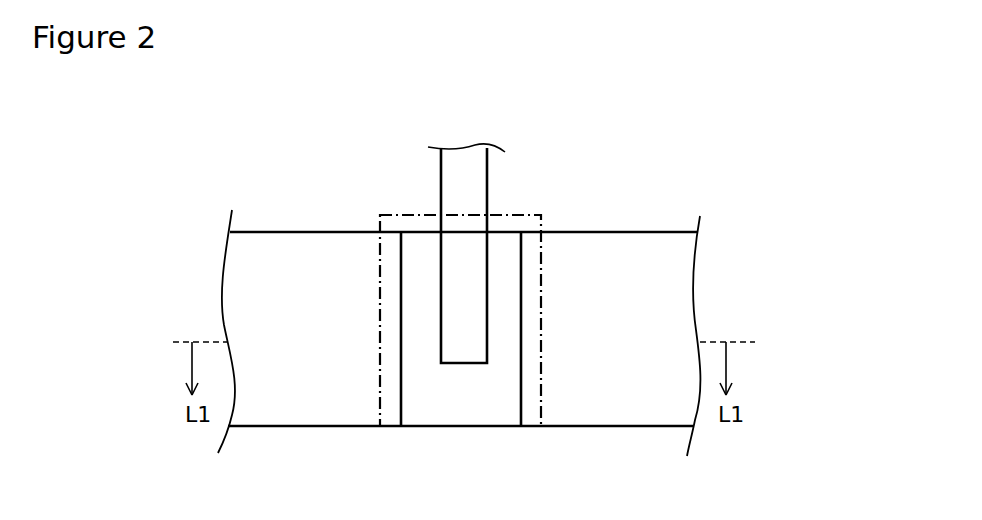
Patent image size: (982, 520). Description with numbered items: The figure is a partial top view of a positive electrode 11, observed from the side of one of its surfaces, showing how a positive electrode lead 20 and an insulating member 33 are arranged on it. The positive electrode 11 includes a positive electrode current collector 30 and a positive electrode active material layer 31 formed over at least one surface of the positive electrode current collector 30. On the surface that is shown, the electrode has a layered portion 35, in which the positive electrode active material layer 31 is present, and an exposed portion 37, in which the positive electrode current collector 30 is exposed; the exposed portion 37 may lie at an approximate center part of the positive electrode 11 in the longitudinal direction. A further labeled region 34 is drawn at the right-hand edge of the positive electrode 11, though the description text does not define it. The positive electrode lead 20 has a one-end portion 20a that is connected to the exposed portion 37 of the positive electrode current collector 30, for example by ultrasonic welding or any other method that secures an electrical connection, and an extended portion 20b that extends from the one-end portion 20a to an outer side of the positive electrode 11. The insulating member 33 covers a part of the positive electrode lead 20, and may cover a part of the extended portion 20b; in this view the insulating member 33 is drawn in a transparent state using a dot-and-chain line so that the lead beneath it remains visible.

The positive electrode 11 is at (515, 327).
The positive electrode lead 20 is at (451, 250).
The one-end portion 20a is at (440, 290).
The extended portion 20b is at (487, 181).
The insulating member 33 is at (543, 381).
The side surface 34 is at (682, 298).
The layered portion 35 is at (463, 224).
The positive electrode active material layer 31 is at (285, 270).
The exposed portion 37 is at (460, 460).
The positive electrode current collector 30 is at (452, 410).